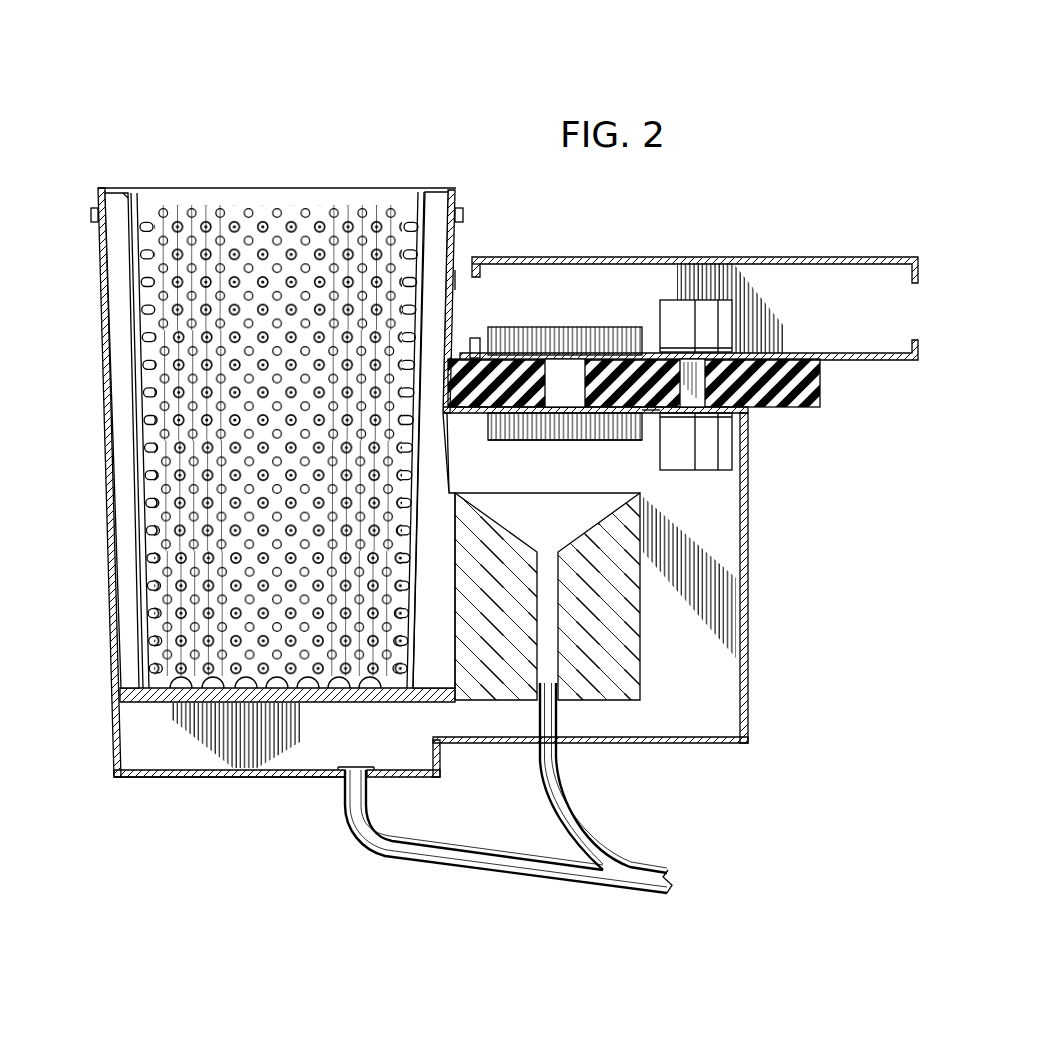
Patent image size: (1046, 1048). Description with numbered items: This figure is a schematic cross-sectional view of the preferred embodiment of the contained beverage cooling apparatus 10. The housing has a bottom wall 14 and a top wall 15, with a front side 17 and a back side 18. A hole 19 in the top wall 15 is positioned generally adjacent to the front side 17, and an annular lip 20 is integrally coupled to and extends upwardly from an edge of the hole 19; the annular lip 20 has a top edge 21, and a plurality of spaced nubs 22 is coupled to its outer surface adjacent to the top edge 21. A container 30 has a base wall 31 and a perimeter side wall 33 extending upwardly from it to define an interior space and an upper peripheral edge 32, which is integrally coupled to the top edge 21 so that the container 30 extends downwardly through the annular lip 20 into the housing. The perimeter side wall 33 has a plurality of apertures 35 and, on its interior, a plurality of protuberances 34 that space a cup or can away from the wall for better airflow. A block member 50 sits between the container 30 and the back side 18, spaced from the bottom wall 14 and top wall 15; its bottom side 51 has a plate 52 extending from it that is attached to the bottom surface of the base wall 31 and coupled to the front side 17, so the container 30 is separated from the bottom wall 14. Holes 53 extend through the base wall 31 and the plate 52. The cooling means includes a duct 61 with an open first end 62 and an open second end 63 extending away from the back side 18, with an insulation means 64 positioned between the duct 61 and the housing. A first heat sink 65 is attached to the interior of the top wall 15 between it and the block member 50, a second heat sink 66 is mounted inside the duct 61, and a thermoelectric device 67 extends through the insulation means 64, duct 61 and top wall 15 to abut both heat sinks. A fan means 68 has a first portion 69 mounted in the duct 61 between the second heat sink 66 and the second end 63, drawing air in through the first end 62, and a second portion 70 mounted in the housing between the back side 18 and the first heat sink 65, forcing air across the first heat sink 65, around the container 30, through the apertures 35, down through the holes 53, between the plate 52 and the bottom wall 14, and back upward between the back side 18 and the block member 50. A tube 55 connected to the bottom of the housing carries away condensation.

The contained beverage cooling apparatus 10 is at (107, 134).
The bottom wall 14 is at (272, 772).
The top wall 15 is at (650, 414).
The front side 17 is at (460, 482).
The back side 18 is at (746, 567).
The hole 19 is at (455, 283).
The annular lip 20 is at (430, 418).
The top edge 21 is at (124, 189).
The spaced nubs 22 is at (96, 222).
The container 30 is at (277, 359).
The base wall 31 is at (121, 702).
The upper peripheral edge 32 is at (136, 190).
The perimeter side wall 33 is at (148, 527).
The protuberances 34 is at (321, 224).
The apertures 35 is at (367, 212).
The block member 50 is at (641, 650).
The bottom side 51 is at (505, 700).
The plate 52 is at (390, 702).
The holes 53 is at (203, 700).
The tube 55 is at (462, 873).
The duct 61 is at (770, 258).
The first end 62 is at (476, 276).
The second end 63 is at (912, 285).
The insulation means 64 is at (822, 388).
The first heat sink 65 is at (598, 428).
The second heat sink 66 is at (598, 328).
The thermoelectric device 67 is at (578, 388).
The fan means 68 is at (702, 383).
The first portion 69 is at (722, 318).
The second portion 70 is at (712, 453).